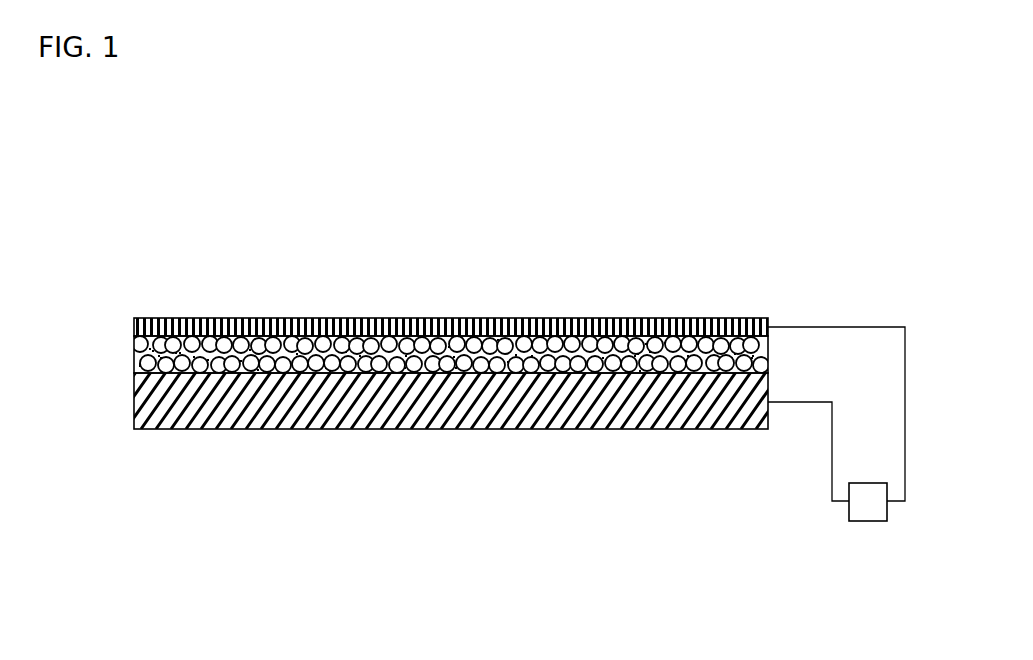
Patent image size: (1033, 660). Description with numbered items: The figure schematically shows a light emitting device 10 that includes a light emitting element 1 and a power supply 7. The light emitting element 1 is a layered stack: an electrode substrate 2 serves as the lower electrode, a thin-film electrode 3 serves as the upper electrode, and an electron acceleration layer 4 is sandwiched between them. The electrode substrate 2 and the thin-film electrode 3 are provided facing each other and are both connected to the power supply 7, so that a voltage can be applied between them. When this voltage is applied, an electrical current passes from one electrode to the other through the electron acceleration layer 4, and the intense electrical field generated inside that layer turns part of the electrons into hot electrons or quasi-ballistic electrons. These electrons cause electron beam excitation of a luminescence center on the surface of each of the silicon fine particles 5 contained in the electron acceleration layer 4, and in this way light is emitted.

The light emitting device 10 is at (135, 223).
The light emitting element 1 is at (89, 317).
The electrode substrate 2 is at (134, 403).
The thin-film electrode 3 is at (134, 326).
The electron acceleration layer 4 is at (134, 362).
The silicon fine particles 5 is at (755, 343).
The power supply 7 is at (870, 521).